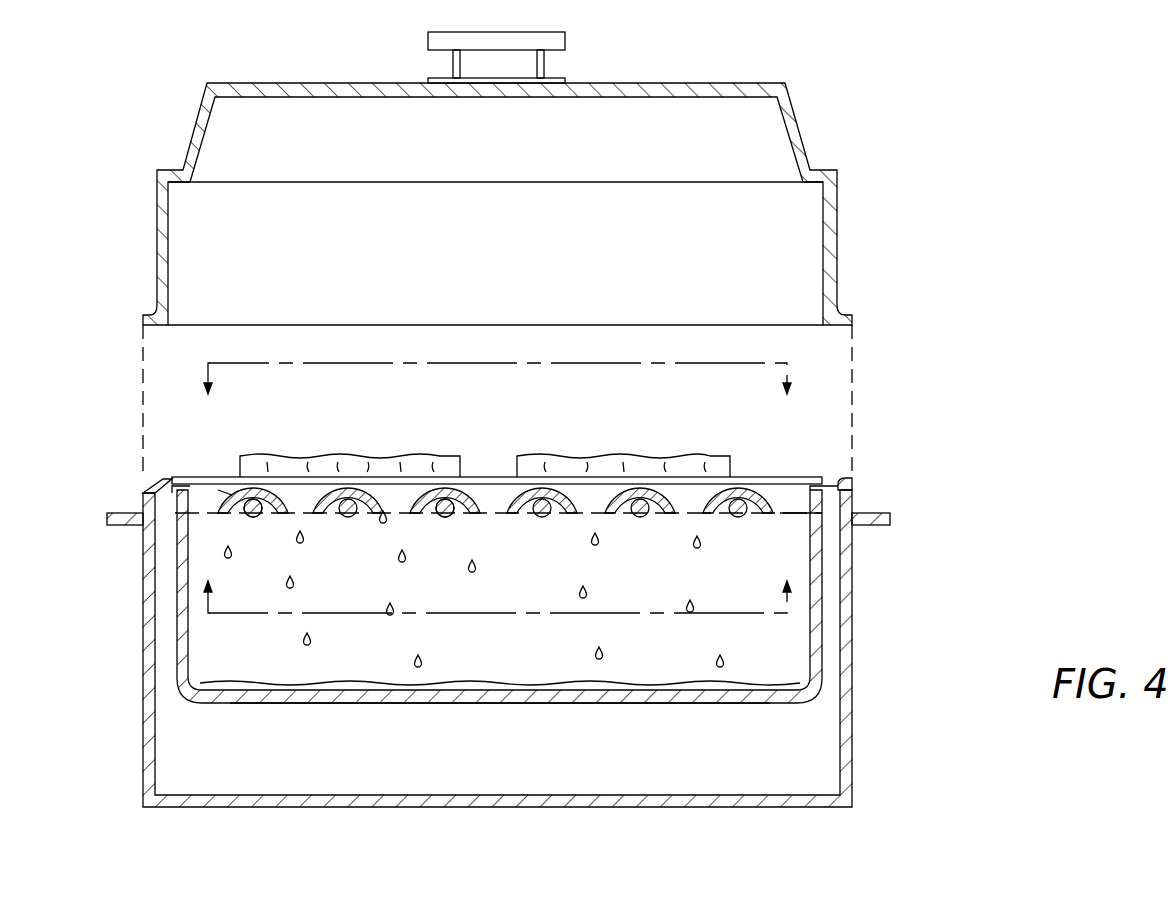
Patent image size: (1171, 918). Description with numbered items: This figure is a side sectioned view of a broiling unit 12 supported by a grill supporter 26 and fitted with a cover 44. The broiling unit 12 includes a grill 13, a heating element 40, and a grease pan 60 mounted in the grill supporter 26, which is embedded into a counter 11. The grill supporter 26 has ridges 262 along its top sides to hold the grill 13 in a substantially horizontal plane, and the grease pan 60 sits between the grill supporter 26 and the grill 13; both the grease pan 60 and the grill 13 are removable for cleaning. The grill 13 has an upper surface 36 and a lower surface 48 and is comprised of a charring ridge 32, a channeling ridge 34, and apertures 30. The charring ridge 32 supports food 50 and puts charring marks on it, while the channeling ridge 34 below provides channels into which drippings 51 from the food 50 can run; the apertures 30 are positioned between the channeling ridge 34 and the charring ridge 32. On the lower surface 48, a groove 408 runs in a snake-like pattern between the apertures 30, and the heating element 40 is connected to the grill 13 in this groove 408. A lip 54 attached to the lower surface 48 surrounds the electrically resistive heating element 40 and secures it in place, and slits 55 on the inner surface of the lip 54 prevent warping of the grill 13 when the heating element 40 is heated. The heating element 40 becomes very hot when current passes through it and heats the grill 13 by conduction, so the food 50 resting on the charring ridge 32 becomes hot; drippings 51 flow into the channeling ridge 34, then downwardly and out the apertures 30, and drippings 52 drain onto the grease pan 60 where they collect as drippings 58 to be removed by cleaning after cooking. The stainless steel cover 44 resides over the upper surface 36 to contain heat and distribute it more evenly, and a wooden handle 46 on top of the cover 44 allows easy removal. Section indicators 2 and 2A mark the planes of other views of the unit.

The section line 2- 2 is at (498, 393).
The section line 2A- 2A is at (499, 586).
The counter 11 is at (875, 513).
The broiling unit 12 is at (915, 737).
The grill 13 is at (200, 480).
The grill supporter 26 is at (295, 807).
The apertures 30 is at (690, 512).
The charring ridge 32 is at (760, 477).
The channeling ridge 34 is at (228, 492).
The upper surface 36 is at (797, 477).
The heating element 40 is at (449, 517).
The cover 44 is at (683, 83).
The wooden handle 46 is at (475, 31).
The lower surface 48 is at (790, 515).
The food 50 is at (321, 455).
The drippings 51 is at (292, 500).
The drippings 52 is at (302, 640).
The lip 54 is at (243, 520).
The slits 55 is at (640, 490).
The drippings 58 is at (648, 690).
The grease pan 60 is at (383, 703).
The ridges 262 is at (848, 497).
The groove 408 is at (465, 505).